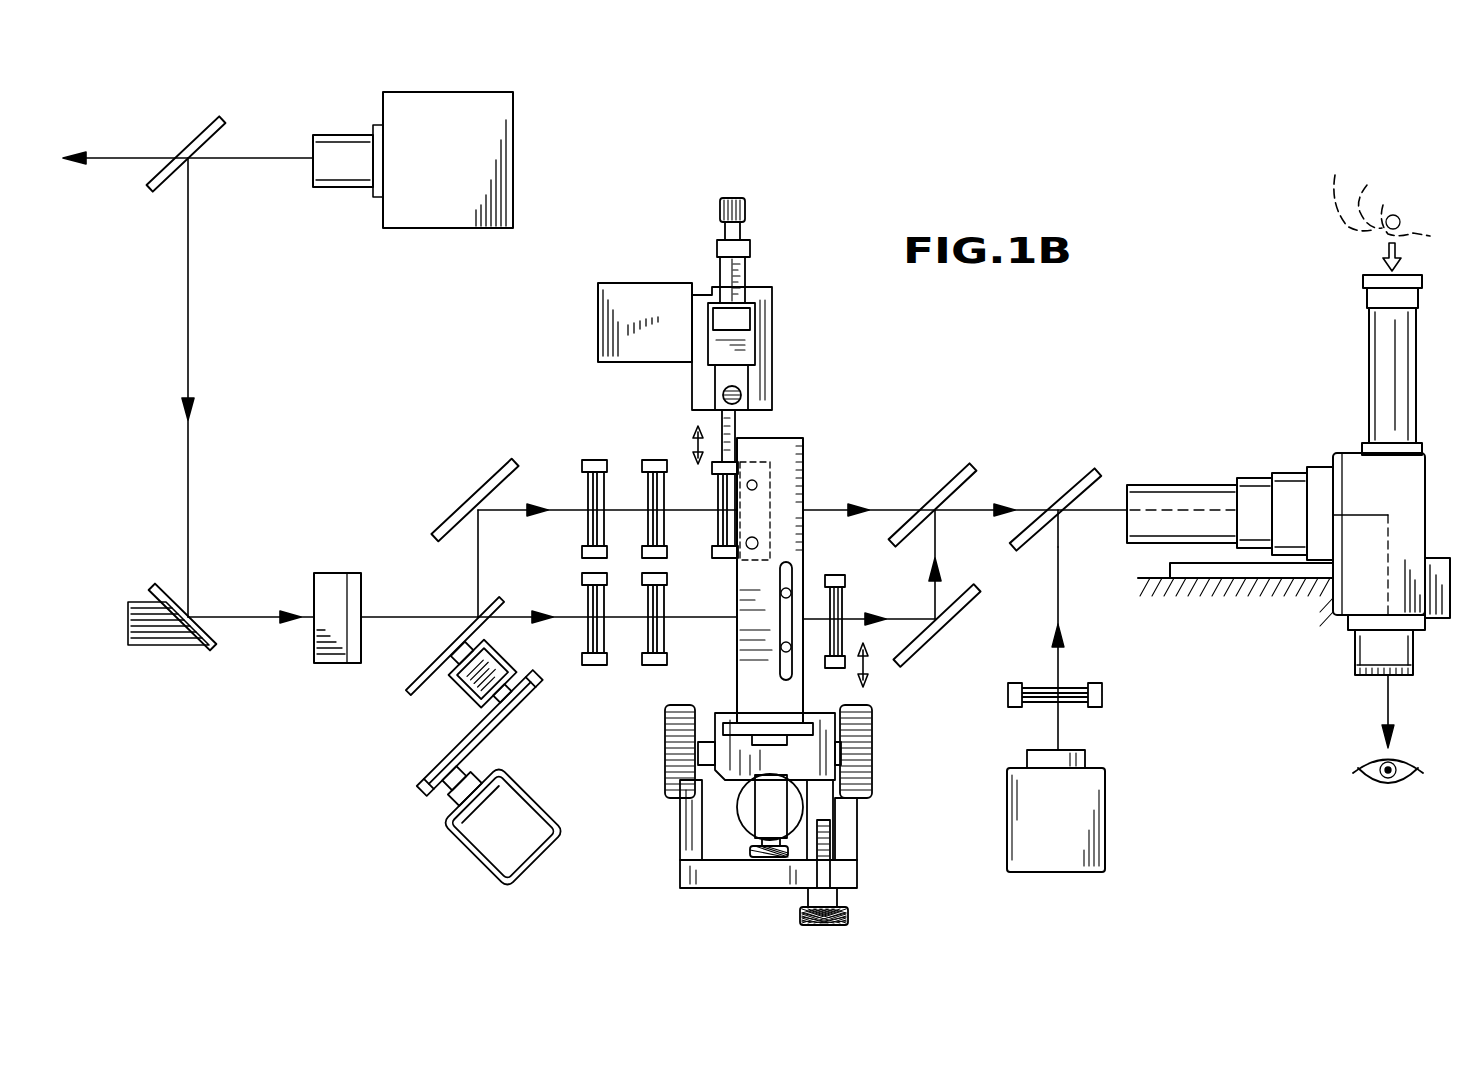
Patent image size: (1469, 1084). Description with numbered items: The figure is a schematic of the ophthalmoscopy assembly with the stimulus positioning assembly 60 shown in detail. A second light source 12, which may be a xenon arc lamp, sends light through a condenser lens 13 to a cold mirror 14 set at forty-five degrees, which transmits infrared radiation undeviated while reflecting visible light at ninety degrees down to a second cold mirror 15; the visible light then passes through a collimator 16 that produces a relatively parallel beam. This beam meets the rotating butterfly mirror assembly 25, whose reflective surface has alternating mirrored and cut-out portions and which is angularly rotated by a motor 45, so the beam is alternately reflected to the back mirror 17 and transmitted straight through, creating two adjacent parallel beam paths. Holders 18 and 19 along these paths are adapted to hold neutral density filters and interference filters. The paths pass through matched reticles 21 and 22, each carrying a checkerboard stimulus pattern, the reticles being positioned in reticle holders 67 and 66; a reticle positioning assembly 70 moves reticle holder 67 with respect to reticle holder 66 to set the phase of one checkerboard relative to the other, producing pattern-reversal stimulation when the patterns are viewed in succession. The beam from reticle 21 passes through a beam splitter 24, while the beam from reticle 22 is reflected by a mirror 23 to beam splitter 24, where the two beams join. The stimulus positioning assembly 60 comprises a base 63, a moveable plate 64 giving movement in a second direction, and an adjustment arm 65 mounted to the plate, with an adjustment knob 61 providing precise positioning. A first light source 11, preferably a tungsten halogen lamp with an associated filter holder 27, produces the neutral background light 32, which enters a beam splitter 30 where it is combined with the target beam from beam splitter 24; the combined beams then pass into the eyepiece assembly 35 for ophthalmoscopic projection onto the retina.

The first light source 11 is at (1068, 833).
The second light source 12 is at (430, 170).
The condenser lens 13 is at (340, 188).
The cold mirror 14 is at (197, 136).
The cold mirror 15 is at (153, 648).
The collimator 16 is at (332, 578).
The back mirror 17 is at (470, 505).
The holder 18 is at (642, 460).
The holder 19 is at (648, 667).
The reticle 21 is at (717, 500).
The reticle 22 is at (845, 607).
The mirror 23 is at (933, 628).
The beam splitter 24 is at (948, 470).
The butterfly mirror assembly 25 is at (408, 680).
The filter holder 27 is at (1103, 697).
The beam splitter 30 is at (1070, 485).
The background light 32 is at (1060, 620).
The eyepiece assembly 35 is at (1360, 496).
The motor 45 is at (463, 838).
The stimulus positioning assembly 60 is at (658, 826).
The adjustment knob 61 is at (664, 768).
The base 63 is at (847, 843).
The moveable plate 64 is at (813, 732).
The adjustment arm 65 is at (745, 684).
The reticle holder 66 is at (830, 575).
The reticle holder 67 is at (725, 560).
The reticle positioning assembly 70 is at (648, 290).